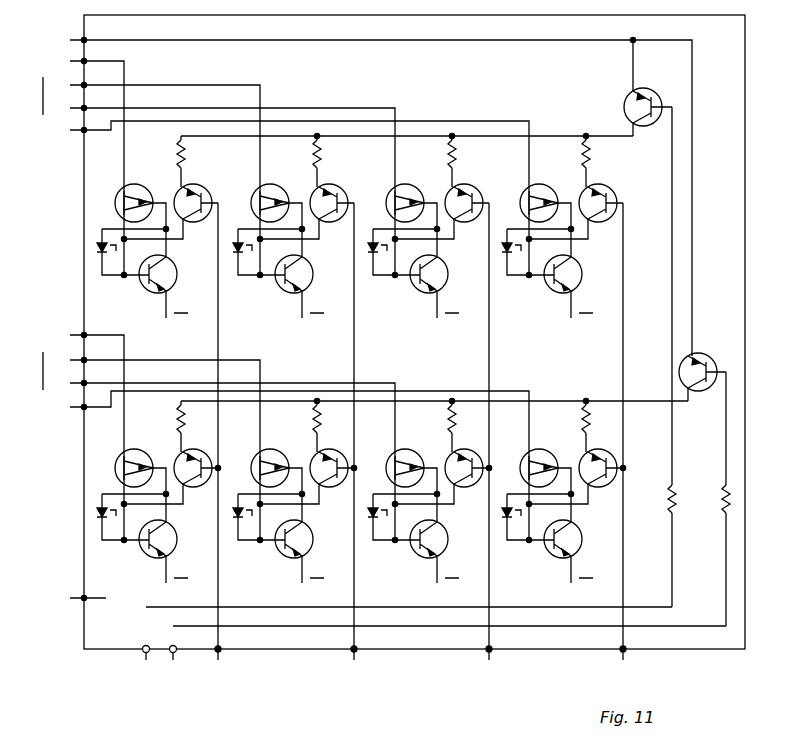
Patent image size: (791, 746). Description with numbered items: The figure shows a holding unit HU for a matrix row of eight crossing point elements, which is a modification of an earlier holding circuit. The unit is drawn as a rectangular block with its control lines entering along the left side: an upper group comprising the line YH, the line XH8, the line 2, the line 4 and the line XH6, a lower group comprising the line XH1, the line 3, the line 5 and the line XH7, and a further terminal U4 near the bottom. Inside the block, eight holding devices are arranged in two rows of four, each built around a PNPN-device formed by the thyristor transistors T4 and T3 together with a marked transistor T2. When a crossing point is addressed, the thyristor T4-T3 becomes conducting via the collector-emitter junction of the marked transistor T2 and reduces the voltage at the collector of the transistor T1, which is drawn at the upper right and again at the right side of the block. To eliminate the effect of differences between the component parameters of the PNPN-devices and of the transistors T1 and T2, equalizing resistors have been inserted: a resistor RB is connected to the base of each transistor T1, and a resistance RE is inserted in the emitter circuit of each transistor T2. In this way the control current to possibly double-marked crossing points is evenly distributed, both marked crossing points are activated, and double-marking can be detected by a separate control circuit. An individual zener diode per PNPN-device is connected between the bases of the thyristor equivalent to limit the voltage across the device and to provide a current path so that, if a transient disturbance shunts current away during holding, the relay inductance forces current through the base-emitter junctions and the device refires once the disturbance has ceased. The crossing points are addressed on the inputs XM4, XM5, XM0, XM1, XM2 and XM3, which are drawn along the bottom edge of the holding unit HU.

The holding unit HU is at (448, 727).
The input line YH is at (367, 194).
The input line XH8 is at (75, 164).
The input line 2 is at (151, 176).
The input line 4 is at (225, 187).
The input line XH6 is at (278, 198).
The input line XH1 is at (75, 433).
The input line 3 is at (151, 446).
The input line 5 is at (225, 457).
The input line XH7 is at (278, 465).
The terminal U4 is at (75, 599).
The transistor T1 is at (650, 92).
The transistor T2 is at (610, 189).
The thyristor transistor T3 is at (552, 293).
The thyristor transistor T4 is at (541, 184).
The emitter resistance RE is at (432, 283).
The base resistor RB is at (681, 366).
The input XM4 is at (390, 645).
The input XM5 is at (442, 655).
The input XM0 is at (233, 443).
The input XM1 is at (350, 443).
The input XM2 is at (485, 443).
The input XM3 is at (619, 443).